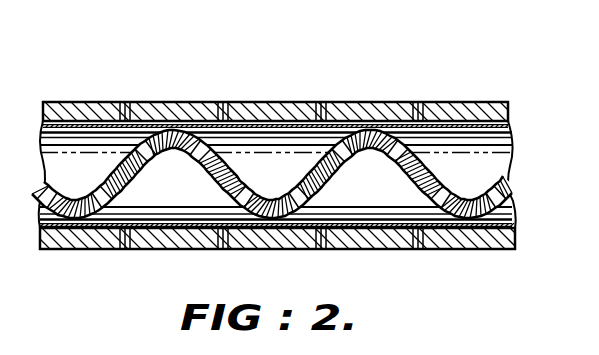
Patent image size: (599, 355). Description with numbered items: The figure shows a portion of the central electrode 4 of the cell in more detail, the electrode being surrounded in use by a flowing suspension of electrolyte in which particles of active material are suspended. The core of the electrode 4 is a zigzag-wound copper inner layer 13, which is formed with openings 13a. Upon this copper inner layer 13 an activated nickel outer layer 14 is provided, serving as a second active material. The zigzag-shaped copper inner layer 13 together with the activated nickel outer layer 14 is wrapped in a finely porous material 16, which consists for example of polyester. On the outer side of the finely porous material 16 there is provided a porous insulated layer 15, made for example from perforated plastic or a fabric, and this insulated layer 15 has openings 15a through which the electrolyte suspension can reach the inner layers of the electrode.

The electrode 4 is at (242, 100).
The zigzag-wound copper inner layer 13 is at (235, 171).
The openings 13a is at (335, 148).
The activated nickel outer layer 14 is at (423, 167).
The porous insulated layer 15 is at (170, 102).
The openings 15a is at (417, 102).
The finely porous material 16 is at (89, 102).